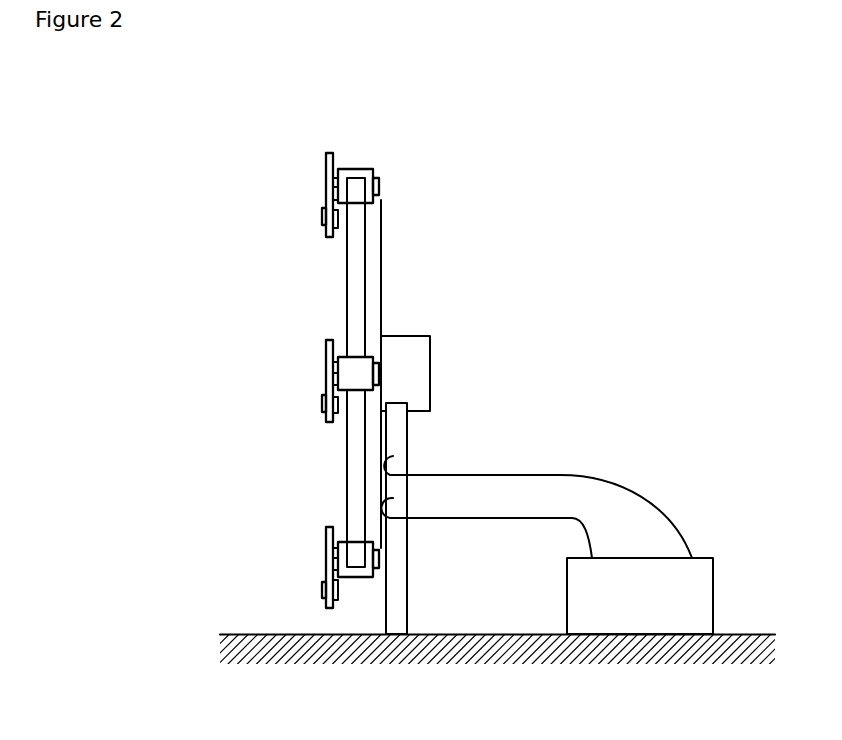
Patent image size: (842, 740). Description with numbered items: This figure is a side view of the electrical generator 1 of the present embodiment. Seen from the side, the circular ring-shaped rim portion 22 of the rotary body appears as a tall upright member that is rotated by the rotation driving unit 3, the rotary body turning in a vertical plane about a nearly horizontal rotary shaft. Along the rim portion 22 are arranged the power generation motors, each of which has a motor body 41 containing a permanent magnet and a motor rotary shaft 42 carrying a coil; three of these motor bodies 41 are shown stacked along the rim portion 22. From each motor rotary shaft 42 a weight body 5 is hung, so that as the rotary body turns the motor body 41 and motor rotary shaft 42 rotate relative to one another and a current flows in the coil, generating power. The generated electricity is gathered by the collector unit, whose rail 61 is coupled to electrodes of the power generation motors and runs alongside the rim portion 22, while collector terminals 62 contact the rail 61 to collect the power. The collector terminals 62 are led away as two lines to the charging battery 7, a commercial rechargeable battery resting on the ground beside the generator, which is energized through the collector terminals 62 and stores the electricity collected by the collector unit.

The electrical generator 1 is at (153, 156).
The rim portion 22 is at (347, 277).
The weight body 5 is at (326, 172).
The motor body 41 is at (363, 170).
The motor rotary shaft 42 is at (338, 165).
The rail 61 is at (381, 252).
The collector terminal 62 is at (423, 475).
The rotation driving unit 3 is at (430, 372).
The charging battery 7 is at (647, 611).